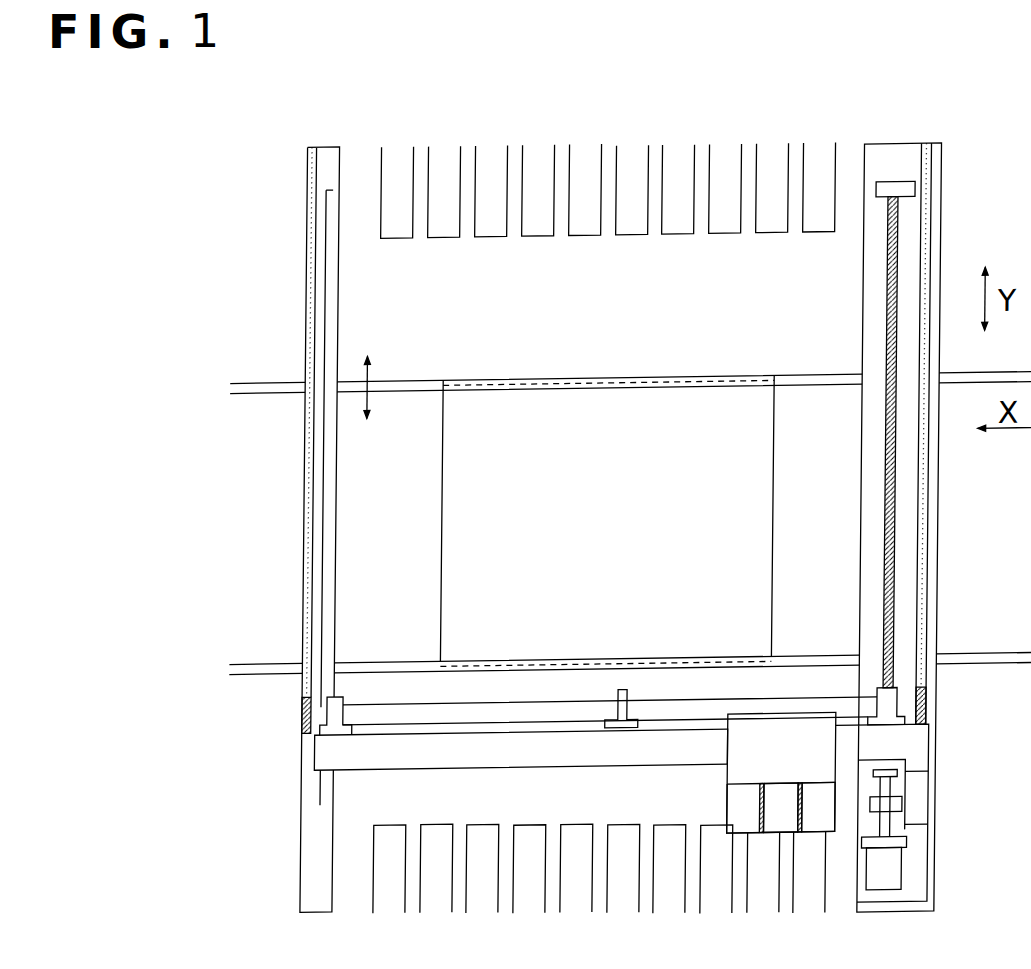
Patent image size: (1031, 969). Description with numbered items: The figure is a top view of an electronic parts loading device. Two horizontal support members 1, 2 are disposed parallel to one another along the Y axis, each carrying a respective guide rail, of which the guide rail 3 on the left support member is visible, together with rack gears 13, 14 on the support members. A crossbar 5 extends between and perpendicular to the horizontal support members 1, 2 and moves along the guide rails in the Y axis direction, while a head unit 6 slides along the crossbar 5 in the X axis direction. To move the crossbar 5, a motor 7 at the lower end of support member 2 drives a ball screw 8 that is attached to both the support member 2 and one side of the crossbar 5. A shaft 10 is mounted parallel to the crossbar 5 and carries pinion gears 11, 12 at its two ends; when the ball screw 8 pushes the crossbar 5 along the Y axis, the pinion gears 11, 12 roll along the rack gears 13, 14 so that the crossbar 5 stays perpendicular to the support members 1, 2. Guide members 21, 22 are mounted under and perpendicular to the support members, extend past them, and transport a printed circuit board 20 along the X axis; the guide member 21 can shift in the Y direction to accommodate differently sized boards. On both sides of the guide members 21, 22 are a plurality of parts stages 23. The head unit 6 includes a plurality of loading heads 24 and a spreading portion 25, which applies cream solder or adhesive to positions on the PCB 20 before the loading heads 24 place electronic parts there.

The horizontal support member 1 is at (316, 819).
The horizontal support member 2 is at (936, 572).
The guide rail 3 is at (301, 558).
The crossbar 5 is at (522, 751).
The head unit 6 is at (738, 769).
The motor 7 is at (894, 882).
The ball screw 8 is at (890, 504).
The shaft 10 is at (779, 708).
The pinion gear 11 is at (939, 708).
The pinion gear 12 is at (298, 711).
The rack gear 13 is at (936, 617).
The rack gear 14 is at (300, 474).
The printed circuit board 20 is at (459, 458).
The guide member 21 is at (407, 387).
The guide member 22 is at (372, 665).
The parts stage 23 is at (527, 229).
The loading head 24 is at (823, 800).
The spreading portion 25 is at (738, 807).